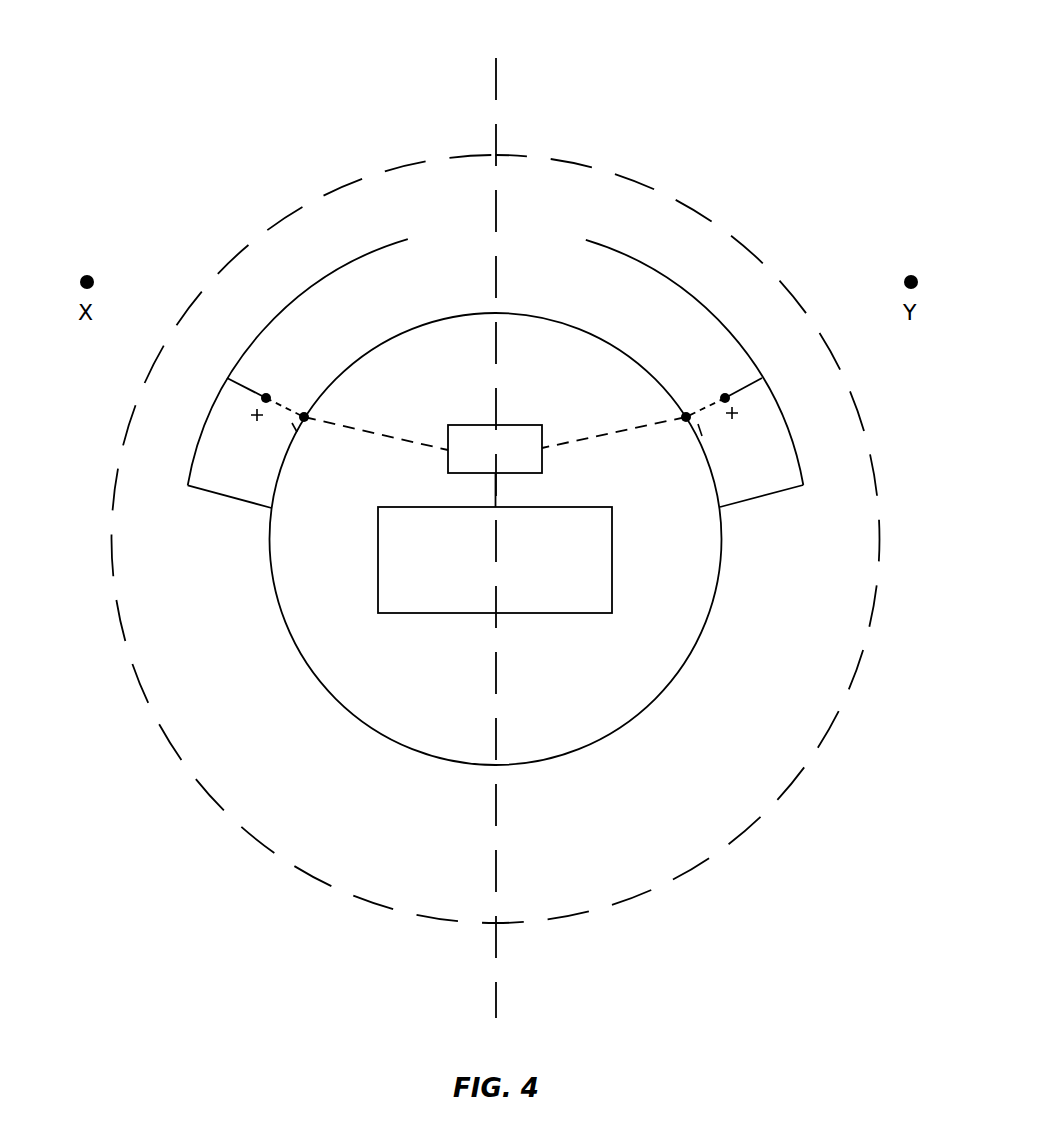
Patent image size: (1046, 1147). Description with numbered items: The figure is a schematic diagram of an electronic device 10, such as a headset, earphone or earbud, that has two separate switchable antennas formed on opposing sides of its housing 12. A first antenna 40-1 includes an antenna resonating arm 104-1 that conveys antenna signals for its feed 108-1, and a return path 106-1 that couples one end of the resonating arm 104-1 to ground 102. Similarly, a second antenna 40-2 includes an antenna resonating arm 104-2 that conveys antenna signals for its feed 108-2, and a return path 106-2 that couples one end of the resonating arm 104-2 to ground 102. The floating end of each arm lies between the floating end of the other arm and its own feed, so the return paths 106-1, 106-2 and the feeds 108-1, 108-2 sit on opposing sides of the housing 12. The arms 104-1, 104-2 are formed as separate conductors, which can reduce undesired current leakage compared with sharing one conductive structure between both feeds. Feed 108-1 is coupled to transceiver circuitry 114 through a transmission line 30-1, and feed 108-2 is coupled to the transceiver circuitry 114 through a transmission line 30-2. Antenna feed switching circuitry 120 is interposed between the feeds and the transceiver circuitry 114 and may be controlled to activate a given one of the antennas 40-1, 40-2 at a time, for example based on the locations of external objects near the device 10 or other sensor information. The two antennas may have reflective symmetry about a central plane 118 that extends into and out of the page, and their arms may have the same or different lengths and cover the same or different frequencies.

The electronic device 10 is at (572, 78).
The housing 12 is at (670, 884).
The plane 118 is at (495, 75).
The ground 102 is at (276, 616).
The first antenna 40-1 is at (285, 390).
The second antenna 40-2 is at (720, 385).
The antenna resonating arm 104-1 is at (327, 276).
The antenna resonating arm 104-2 is at (647, 266).
The return path 106-1 is at (218, 501).
The return path 106-2 is at (767, 496).
The antenna feed 108-1 is at (291, 389).
The antenna feed 108-2 is at (700, 390).
The transmission line 30-1 is at (383, 433).
The transmission line 30-2 is at (610, 433).
The antenna feed switching circuitry 120 is at (498, 424).
The transceiver circuitry 114 is at (613, 553).